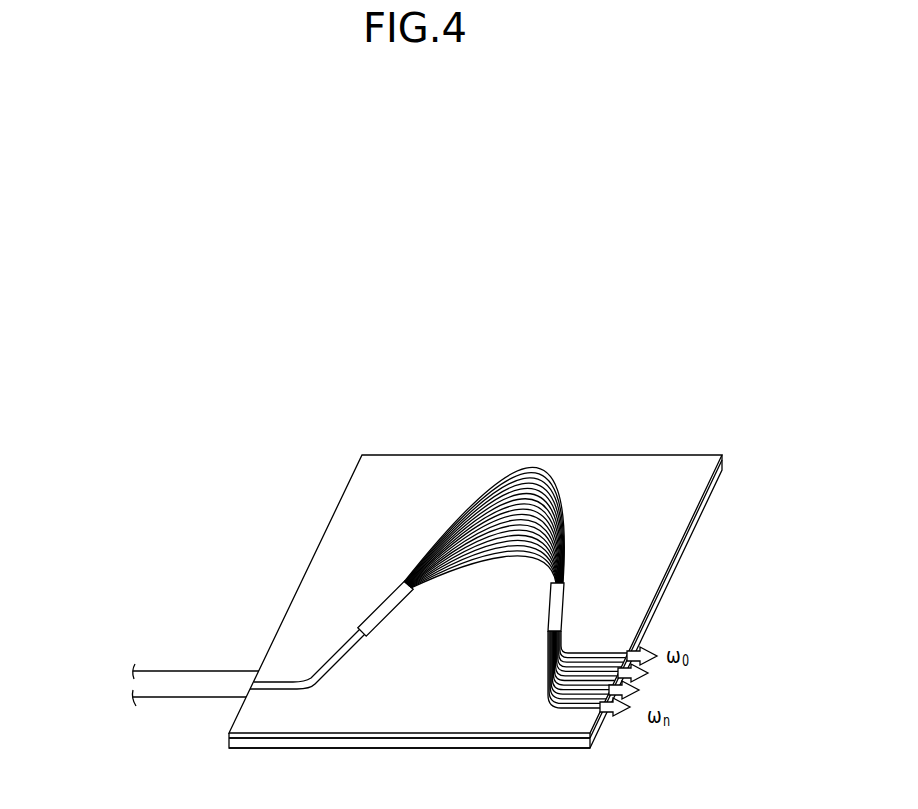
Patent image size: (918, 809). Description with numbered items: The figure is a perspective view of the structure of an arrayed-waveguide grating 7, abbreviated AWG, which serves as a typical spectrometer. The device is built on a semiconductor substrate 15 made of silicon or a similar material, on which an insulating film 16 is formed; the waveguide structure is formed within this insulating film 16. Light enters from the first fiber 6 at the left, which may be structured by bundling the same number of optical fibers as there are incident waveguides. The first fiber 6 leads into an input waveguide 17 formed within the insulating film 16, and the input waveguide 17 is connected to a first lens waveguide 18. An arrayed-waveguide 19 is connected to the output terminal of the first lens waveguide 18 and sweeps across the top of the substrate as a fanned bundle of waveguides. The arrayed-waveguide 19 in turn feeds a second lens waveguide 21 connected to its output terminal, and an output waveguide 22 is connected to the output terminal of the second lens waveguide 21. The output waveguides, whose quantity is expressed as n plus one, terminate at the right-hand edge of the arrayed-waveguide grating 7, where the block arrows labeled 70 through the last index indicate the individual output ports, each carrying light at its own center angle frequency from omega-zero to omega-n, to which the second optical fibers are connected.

The first fiber 6 is at (147, 692).
The arrayed-waveguide grating 7 is at (478, 453).
The semiconductor substrate 15 is at (228, 747).
The insulating film 16 is at (230, 736).
The input waveguide 17 is at (297, 689).
The first lens waveguide 18 is at (387, 613).
The arrayed-waveguide 19 is at (462, 522).
The second lens waveguide 21 is at (550, 610).
The output waveguide 22 is at (548, 681).
The output ports 7_0 to 7_n 70 is at (617, 717).